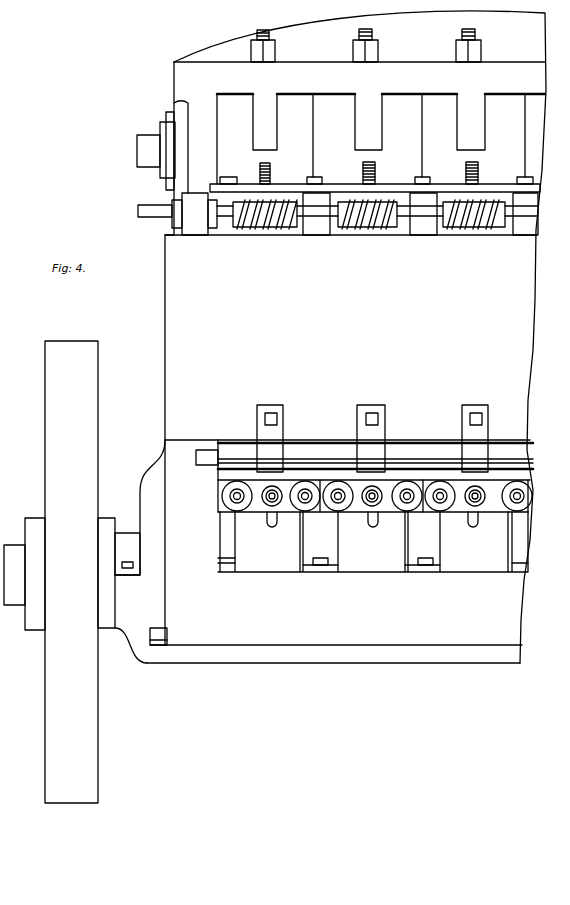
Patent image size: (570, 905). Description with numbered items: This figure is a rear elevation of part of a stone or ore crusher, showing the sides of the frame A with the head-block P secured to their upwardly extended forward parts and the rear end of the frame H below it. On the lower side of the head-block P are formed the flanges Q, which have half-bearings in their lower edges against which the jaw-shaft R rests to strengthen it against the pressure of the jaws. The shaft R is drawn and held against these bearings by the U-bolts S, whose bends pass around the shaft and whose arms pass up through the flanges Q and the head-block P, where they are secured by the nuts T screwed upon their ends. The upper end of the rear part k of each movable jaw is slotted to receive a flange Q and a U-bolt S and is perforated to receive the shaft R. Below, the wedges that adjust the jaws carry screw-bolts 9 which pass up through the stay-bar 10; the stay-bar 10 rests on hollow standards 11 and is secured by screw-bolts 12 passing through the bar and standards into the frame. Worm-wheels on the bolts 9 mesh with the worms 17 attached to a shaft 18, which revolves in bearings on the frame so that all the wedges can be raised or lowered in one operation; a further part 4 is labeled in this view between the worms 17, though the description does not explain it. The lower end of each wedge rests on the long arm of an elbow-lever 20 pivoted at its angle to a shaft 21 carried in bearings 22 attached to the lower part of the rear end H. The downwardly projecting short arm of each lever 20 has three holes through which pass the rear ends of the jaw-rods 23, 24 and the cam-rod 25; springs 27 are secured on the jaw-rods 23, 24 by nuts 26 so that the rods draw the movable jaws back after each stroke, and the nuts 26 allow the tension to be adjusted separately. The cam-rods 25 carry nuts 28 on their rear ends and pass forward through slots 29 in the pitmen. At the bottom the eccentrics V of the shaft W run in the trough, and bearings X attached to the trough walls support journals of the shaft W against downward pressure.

The shaft 4 is at (377, 210).
The screw-bolt 9 is at (362, 173).
The stay-bar 10 is at (375, 183).
The hollow standards 11 is at (360, 214).
The screw-bolts 12 is at (376, 172).
The worms 17 is at (272, 230).
The shaft 18 is at (160, 210).
The elbow-lever 20 is at (375, 476).
The shaft 21 is at (197, 457).
The bearings 22 is at (372, 438).
The jaw-rod 23 is at (240, 513).
The jaw-rod 24 is at (517, 513).
The cam-rods 25 is at (487, 518).
The nuts 26 is at (397, 540).
The springs 27 is at (377, 493).
The nuts 28 is at (353, 540).
The slots 29 is at (270, 525).
The sides of the frame A is at (330, 337).
The head-block P is at (381, 80).
The U-bolts S is at (363, 26).
The nuts T is at (272, 52).
The jaw-shaft R is at (156, 151).
The rear part of the movable jaw k is at (376, 135).
The flanges Q is at (369, 122).
The rear end of the frame H is at (350, 323).
The shaft W is at (59, 572).
The eccentrics V is at (366, 601).
The bearings X is at (371, 572).